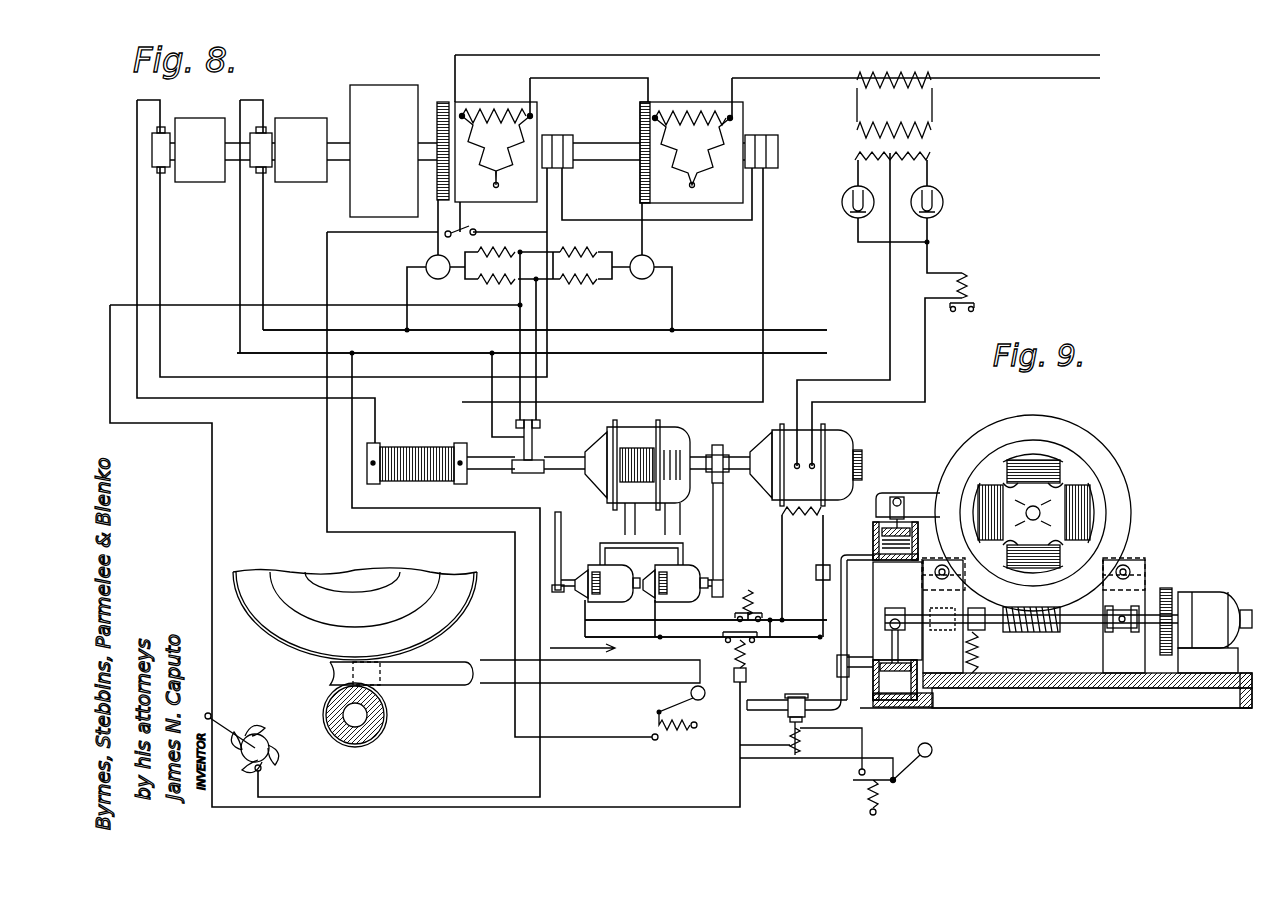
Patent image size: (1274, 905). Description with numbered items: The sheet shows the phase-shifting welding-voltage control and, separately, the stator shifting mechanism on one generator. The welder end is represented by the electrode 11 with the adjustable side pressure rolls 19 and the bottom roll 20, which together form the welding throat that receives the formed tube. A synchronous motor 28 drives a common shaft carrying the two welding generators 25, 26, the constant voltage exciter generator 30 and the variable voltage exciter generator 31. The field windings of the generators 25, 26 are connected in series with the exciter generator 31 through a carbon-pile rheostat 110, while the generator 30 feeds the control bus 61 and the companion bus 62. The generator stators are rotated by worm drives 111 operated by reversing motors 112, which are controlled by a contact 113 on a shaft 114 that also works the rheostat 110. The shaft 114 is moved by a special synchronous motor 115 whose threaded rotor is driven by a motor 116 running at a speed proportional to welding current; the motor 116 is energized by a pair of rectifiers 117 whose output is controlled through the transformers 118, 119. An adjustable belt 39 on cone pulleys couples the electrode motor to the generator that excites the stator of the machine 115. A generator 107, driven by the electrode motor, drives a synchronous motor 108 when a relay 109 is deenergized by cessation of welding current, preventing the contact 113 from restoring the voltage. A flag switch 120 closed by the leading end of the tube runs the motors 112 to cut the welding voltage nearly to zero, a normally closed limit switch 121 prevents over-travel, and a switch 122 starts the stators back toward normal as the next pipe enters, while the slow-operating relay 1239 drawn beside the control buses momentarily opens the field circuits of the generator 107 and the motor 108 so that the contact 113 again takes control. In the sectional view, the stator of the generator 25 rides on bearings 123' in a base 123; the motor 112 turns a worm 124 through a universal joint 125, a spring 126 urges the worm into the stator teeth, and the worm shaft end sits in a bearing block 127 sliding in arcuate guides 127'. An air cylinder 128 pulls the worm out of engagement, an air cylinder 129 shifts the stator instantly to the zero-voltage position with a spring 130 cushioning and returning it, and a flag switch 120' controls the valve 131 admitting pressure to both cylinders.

In FIG. 8, the electrode 11 is at (275, 618).
In FIG. 8, the side pressure rolls 19 is at (318, 674).
In FIG. 8, the bottom roll 20 is at (354, 742).
In FIG. 8, the variable voltage main generator 25 is at (482, 110).
In FIG. 9, the variable voltage main generator 25 is at (1034, 422).
In FIG. 8, the generator 26 is at (684, 108).
In FIG. 8, the synchronous motor 28 is at (366, 92).
In FIG. 8, the exciter generator 30 is at (296, 124).
In FIG. 8, the exciter generator 31 is at (196, 124).
In FIG. 8, the adjustable belt 39 is at (561, 525).
In FIG. 8, the control bus 61 is at (797, 328).
In FIG. 8, the bus 62 is at (797, 354).
In FIG. 8, the generator 107 is at (618, 596).
In FIG. 8, the synchronous motor 108 is at (688, 596).
In FIG. 8, the relay 109 is at (966, 286).
In FIG. 8, the carbon-pile rheostat 110 is at (420, 444).
In FIG. 8, the worm drives 111 is at (437, 135).
In FIG. 8, the reversing motors 112 is at (427, 262).
In FIG. 9, the reversing motors 112 is at (1208, 591).
In FIG. 8, the contact 113 is at (530, 455).
In FIG. 8, the shaft 114 is at (560, 470).
In FIG. 8, the synchronous motor 115 is at (634, 436).
In FIG. 8, the motor 116 is at (835, 440).
In FIG. 8, the rectifiers 117 is at (918, 190).
In FIG. 8, the transformer 118 is at (932, 128).
In FIG. 8, the transformer 119 is at (932, 84).
In FIG. 8, the flag switch 120 is at (678, 721).
In FIG. 9, the flag switch 120' is at (892, 779).
In FIG. 8, the limit switch 121 is at (462, 232).
In FIG. 8, the switch 122 is at (262, 735).
In FIG. 9, the base 123 is at (982, 618).
In FIG. 9, the bearings 123' is at (1136, 603).
In FIG. 9, the worm 124 is at (1034, 632).
In FIG. 9, the universal joint 125 is at (1105, 628).
In FIG. 9, the spring 126 is at (982, 658).
In FIG. 9, the bearing block 127 is at (1031, 642).
In FIG. 9, the arcuate guides 127' is at (955, 606).
In FIG. 9, the air cylinder 128 is at (902, 708).
In FIG. 9, the air cylinder 129 is at (882, 532).
In FIG. 9, the spring 130 is at (873, 549).
In FIG. 9, the valve 131 is at (796, 702).
In FIG. 8, the switch 1239 is at (728, 644).